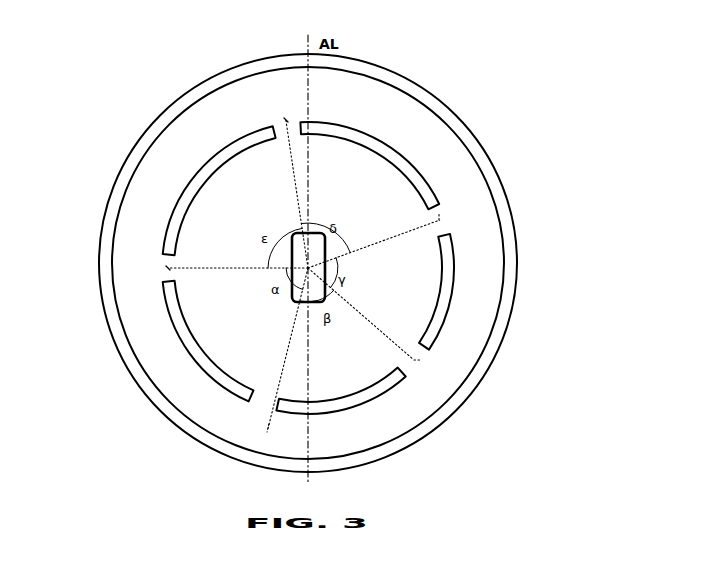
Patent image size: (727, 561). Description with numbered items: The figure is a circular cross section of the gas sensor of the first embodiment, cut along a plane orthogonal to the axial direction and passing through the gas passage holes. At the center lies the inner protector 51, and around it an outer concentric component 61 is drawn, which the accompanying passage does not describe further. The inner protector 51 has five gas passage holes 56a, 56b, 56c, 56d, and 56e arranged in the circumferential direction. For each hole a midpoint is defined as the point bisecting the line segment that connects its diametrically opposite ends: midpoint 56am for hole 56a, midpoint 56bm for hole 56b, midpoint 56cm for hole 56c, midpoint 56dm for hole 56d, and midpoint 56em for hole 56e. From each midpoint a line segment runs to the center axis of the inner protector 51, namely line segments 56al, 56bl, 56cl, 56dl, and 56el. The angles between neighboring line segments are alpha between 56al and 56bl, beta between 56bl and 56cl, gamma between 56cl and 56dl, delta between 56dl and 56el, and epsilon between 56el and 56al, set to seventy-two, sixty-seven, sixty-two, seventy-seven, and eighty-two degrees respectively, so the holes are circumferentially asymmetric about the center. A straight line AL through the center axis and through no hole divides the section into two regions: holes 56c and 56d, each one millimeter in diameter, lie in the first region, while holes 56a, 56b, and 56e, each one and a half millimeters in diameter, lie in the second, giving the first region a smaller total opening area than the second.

The stator / outer ring 61 is at (425, 91).
The inner protector 51 is at (183, 306).
The gas passage hole 56a is at (165, 282).
The gas passage hole 56b is at (248, 398).
The gas passage hole 56c is at (402, 382).
The gas passage hole 56d is at (451, 237).
The gas passage hole 56e is at (307, 122).
The line segment 56al is at (185, 268).
The midpoint 56am is at (168, 268).
The line segment 56bl is at (282, 351).
The midpoint 56bm is at (294, 434).
The line segment 56cl is at (367, 318).
The midpoint 56cm is at (420, 360).
The line segment 56dl is at (362, 245).
The midpoint 56dm is at (439, 212).
The line segment 56el is at (295, 192).
The midpoint 56em is at (290, 128).